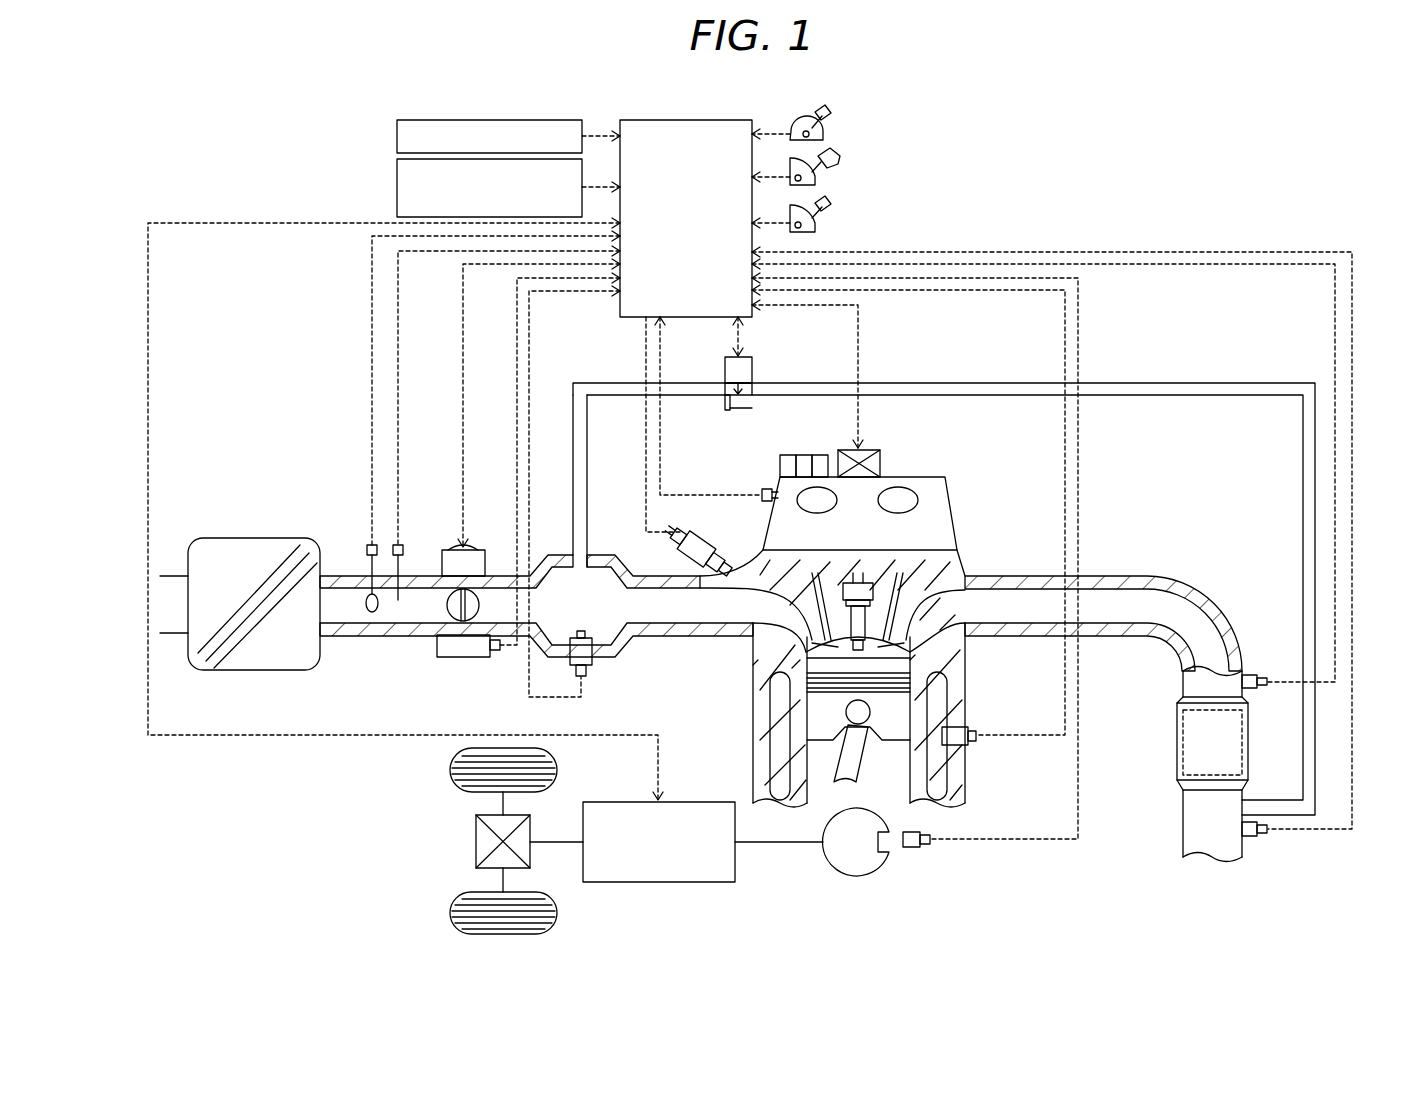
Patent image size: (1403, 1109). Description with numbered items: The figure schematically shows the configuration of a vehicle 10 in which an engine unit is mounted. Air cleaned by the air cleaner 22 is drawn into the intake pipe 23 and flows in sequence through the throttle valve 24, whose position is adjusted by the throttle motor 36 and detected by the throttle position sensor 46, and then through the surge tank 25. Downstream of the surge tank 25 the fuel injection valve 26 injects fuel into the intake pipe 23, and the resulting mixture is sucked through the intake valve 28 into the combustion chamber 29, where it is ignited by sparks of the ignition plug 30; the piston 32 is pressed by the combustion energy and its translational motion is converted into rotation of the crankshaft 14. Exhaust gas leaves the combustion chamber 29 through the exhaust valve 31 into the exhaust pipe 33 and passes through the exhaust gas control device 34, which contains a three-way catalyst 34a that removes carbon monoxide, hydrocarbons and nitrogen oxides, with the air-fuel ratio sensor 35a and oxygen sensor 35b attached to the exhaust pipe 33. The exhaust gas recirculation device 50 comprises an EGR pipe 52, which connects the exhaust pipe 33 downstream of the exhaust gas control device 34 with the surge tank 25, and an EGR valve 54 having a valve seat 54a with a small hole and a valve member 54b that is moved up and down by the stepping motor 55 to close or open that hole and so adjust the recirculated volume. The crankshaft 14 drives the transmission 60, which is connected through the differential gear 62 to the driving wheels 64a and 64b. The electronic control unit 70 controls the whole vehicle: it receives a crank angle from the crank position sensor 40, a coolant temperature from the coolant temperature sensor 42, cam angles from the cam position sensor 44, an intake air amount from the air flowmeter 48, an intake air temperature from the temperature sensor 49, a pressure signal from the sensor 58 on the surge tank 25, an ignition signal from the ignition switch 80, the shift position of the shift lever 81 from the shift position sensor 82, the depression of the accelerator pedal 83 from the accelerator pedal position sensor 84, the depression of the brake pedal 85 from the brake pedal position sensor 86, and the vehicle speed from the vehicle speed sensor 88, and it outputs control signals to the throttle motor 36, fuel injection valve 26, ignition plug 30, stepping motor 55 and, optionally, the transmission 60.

The vehicle 10 is at (1071, 148).
The crankshaft 14 is at (860, 876).
The air cleaner 22 is at (253, 537).
The intake pipe 23 is at (391, 640).
The throttle valve 24 is at (449, 614).
The surge tank 25 is at (568, 552).
The fuel injection valve 26 is at (688, 560).
The intake valve 28 is at (790, 628).
The combustion chamber 29 is at (800, 652).
The ignition plug 30 is at (875, 612).
The exhaust valve 31 is at (912, 648).
The piston 32 is at (820, 728).
The exhaust pipe 33 is at (1112, 640).
The exhaust gas control device 34 is at (1177, 758).
The catalyst 34a is at (1176, 735).
The air-fuel ratio sensor 35a is at (1250, 672).
The oxygen sensor 35b is at (1250, 840).
The throttle motor 36 is at (481, 548).
The crank position sensor 40 is at (908, 850).
The coolant temperature sensor 42 is at (972, 748).
The cam position sensor 44 is at (763, 498).
The throttle position sensor 46 is at (463, 658).
The air flowmeter 48 is at (367, 546).
The temperature sensor 49 is at (403, 546).
The exhaust gas recirculation device 50 is at (1142, 472).
The EGR pipe 52 is at (1150, 382).
The EGR valve 54 is at (748, 401).
The valve seat 54a is at (727, 411).
The valve member 54b is at (734, 389).
The stepping motor 55 is at (752, 368).
The intake pressure sensor 58 is at (588, 678).
The transmission 60 is at (677, 800).
The differential gear 62 is at (476, 840).
The driving wheel 64a is at (450, 775).
The driving wheel 64b is at (450, 913).
The electronic control unit 70 is at (682, 118).
The ignition switch 80 is at (397, 140).
The shift lever 81 is at (828, 118).
The shift position sensor 82 is at (824, 137).
The accelerator pedal 83 is at (836, 158).
The accelerator pedal position sensor 84 is at (816, 180).
The brake pedal 85 is at (828, 207).
The brake pedal position sensor 86 is at (816, 228).
The vehicle speed sensor 88 is at (397, 191).